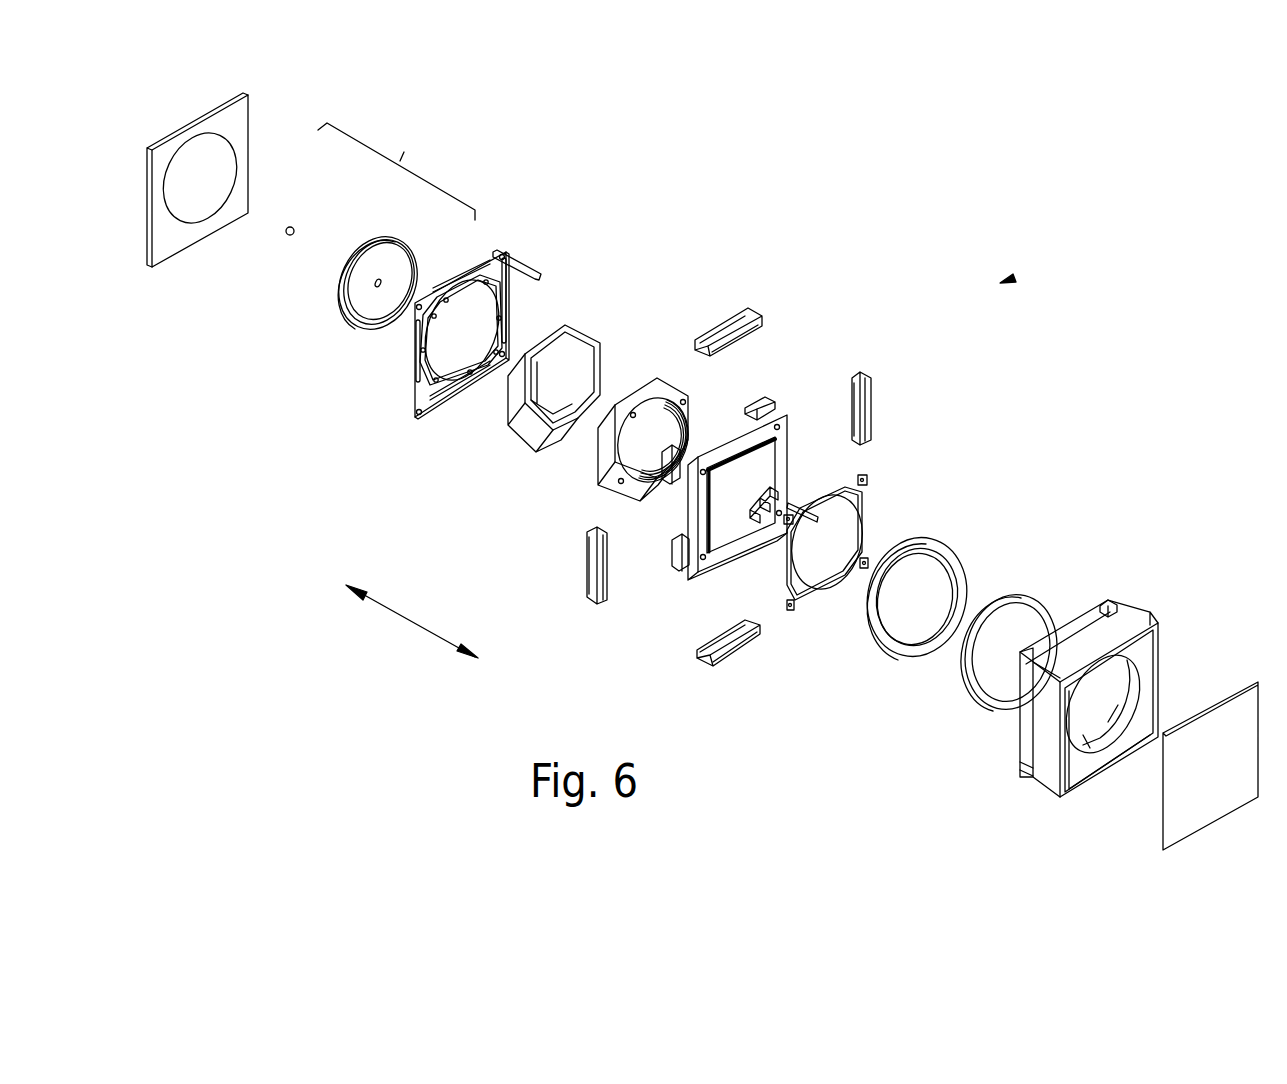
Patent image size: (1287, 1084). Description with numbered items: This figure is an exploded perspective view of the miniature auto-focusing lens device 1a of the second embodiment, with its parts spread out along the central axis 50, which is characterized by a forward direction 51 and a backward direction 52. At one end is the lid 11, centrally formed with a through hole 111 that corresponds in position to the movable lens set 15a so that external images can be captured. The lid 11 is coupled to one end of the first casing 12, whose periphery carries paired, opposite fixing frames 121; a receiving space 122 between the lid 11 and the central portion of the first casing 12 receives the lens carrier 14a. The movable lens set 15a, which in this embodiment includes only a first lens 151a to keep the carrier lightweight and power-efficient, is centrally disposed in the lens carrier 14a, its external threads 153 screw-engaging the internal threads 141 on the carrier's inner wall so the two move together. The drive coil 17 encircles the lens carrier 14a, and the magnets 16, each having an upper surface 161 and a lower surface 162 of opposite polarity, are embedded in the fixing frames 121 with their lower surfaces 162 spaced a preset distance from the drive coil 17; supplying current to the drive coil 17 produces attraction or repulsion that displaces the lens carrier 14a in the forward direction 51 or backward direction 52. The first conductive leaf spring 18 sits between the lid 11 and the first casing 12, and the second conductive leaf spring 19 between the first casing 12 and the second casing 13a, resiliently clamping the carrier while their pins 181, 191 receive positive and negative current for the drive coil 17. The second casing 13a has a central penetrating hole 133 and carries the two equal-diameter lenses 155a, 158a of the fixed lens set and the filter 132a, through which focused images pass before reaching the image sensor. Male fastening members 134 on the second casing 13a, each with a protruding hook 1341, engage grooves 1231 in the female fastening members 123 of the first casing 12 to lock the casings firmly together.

The miniature auto-focusing lens device 1a is at (1003, 282).
The lid 11 is at (241, 169).
The through hole 111 is at (232, 128).
The first casing 12 is at (742, 459).
The fixing frames 121 is at (723, 430).
The receiving space 122 is at (727, 512).
The female fastening members 123 is at (780, 447).
The groove 1231 is at (675, 477).
The second casing 13a is at (1087, 654).
The filter 132a is at (1198, 733).
The penetrating hole 133 is at (1130, 690).
The male fastening members 134 is at (1107, 637).
The hook 1341 is at (1105, 603).
The lens carrier 14a is at (610, 421).
The internal threads 141 is at (600, 477).
The movable lens set 15a is at (396, 171).
The first lens 151a is at (291, 228).
The external threads 153 is at (380, 240).
The lens 155a is at (948, 542).
The lens 158a is at (1020, 593).
The magnets 16 is at (721, 490).
The upper surface 161 is at (718, 330).
The lower surface 162 is at (745, 340).
The drive coil 17 is at (565, 336).
The first conductive leaf spring 18 is at (507, 295).
The pin 181 is at (530, 272).
The second conductive leaf spring 19 is at (860, 542).
The pin 191 is at (817, 517).
The central axis 50 is at (377, 652).
The forward direction 51 is at (350, 588).
The backward direction 52 is at (463, 655).